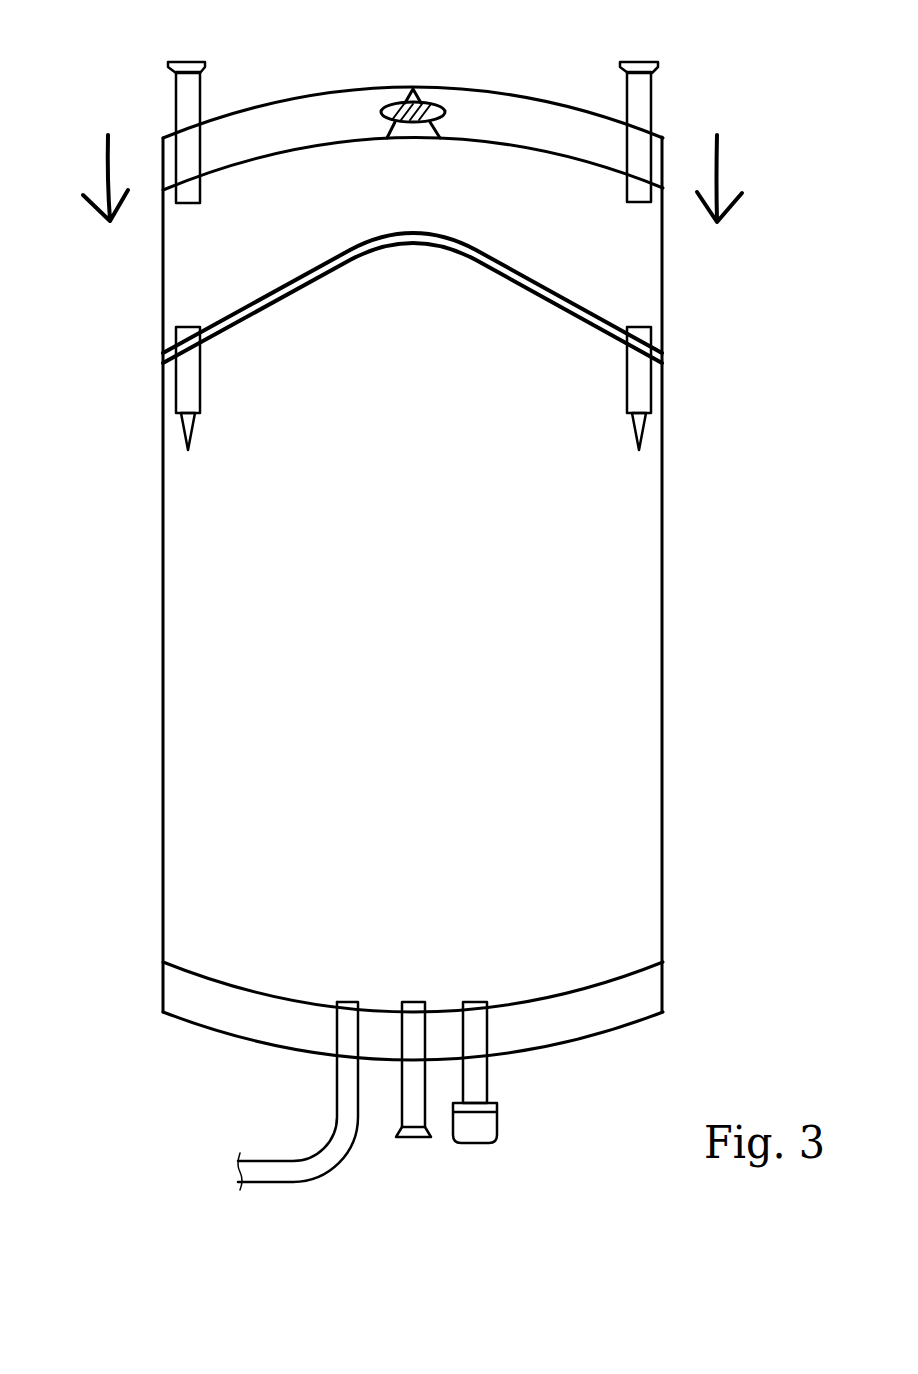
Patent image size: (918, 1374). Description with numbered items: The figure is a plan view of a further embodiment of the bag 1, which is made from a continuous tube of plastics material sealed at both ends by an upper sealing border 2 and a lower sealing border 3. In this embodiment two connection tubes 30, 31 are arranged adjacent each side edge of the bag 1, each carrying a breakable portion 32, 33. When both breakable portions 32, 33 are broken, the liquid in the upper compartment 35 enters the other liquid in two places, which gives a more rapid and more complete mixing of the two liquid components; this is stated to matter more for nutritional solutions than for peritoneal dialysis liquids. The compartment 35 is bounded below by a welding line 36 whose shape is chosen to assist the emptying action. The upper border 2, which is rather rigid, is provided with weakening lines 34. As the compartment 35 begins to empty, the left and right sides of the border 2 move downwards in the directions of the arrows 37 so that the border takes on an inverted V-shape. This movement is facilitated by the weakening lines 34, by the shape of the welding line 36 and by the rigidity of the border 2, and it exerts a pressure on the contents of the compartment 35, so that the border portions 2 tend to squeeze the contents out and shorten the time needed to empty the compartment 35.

The bag 1 is at (663, 757).
The upper sealing border 2 is at (522, 97).
The lower sealing border 3 is at (663, 985).
The connection tube 30 is at (648, 335).
The connection tube 31 is at (176, 328).
The breakable portion 32 is at (645, 433).
The breakable portion 33 is at (182, 427).
The weakening lines 34 is at (428, 99).
The compartment 35 is at (648, 273).
The welding line 36 is at (253, 303).
The arrows 37 is at (105, 167).